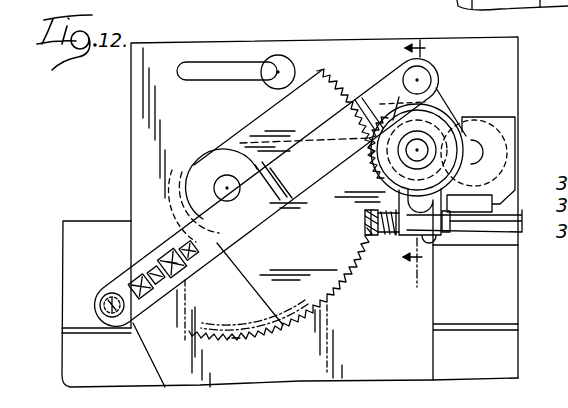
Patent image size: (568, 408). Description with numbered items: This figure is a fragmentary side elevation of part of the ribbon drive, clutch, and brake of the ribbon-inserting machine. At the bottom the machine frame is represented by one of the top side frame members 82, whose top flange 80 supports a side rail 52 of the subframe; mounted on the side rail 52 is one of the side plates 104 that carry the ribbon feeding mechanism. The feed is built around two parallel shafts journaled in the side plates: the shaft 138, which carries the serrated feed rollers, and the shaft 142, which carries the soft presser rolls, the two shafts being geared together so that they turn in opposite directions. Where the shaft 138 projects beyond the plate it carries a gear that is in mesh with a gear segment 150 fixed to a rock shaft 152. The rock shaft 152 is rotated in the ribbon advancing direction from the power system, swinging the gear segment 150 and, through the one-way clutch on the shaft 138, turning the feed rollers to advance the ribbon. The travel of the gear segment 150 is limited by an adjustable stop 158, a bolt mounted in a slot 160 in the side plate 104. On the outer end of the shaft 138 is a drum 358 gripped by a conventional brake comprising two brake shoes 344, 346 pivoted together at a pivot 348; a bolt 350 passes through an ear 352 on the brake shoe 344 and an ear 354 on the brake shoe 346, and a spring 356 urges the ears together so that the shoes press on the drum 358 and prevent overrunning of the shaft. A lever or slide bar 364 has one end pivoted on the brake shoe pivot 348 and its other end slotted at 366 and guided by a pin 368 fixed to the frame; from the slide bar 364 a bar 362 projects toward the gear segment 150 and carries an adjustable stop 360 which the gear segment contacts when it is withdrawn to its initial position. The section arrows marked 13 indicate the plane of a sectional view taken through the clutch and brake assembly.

The section line 13- 13 is at (435, 162).
The side rails 52 is at (80, 226).
The top flange 80 is at (80, 327).
The top side frame members 82 is at (75, 355).
The side plates 104 is at (143, 100).
The shaft 138 is at (445, 92).
The shaft 142 is at (481, 150).
The gear segment 150 is at (283, 327).
The rock shaft 152 is at (227, 186).
The adjustable stop 158 is at (280, 60).
The slot 160 is at (193, 64).
The brake shoe 344 is at (420, 147).
The brake shoe 346 is at (355, 160).
The brake shoe pivot 348 is at (431, 79).
The bolt 350 is at (407, 246).
The ear 352 is at (437, 242).
The ear 354 is at (400, 236).
The spring 356 is at (368, 216).
The drum 358 is at (380, 170).
The adjustable stop 360 is at (182, 228).
The bar 362 is at (182, 296).
The slide bar 364 is at (190, 226).
The slot 366 is at (138, 342).
The pin 368 is at (111, 322).